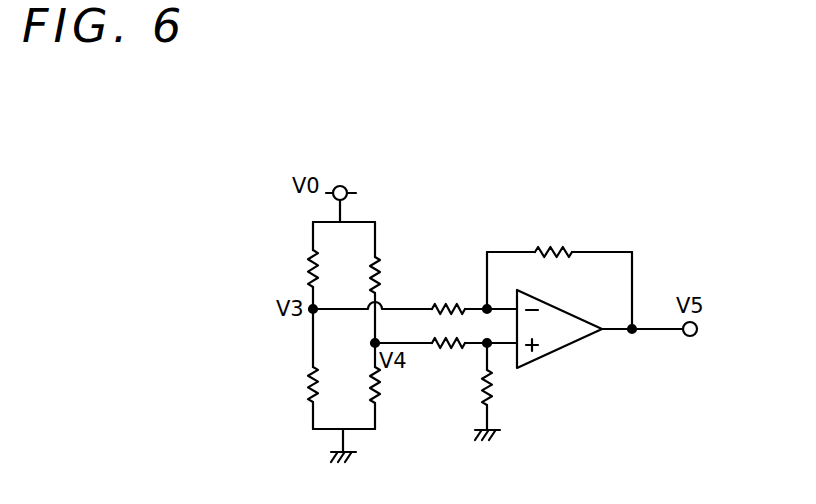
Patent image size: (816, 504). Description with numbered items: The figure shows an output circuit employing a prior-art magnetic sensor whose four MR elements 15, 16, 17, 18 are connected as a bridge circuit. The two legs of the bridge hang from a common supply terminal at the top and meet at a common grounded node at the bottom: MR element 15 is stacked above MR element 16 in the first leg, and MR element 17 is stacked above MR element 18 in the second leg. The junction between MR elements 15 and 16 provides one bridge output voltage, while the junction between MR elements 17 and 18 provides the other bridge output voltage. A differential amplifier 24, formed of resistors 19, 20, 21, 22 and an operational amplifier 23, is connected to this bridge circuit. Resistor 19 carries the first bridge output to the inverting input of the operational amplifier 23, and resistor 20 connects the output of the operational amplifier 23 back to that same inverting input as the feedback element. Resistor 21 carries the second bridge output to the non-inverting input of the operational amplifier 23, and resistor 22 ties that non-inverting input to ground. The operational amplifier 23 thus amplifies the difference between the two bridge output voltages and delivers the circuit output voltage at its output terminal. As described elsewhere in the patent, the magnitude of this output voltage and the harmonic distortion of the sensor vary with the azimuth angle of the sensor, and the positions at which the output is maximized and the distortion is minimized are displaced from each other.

The MR element 15 is at (307, 263).
The MR element 16 is at (307, 391).
The MR element 17 is at (382, 265).
The MR element 18 is at (382, 393).
The resistor 19 is at (448, 300).
The resistor 20 is at (548, 243).
The resistor 21 is at (448, 357).
The resistor 22 is at (496, 383).
The operational amplifier 23 is at (575, 313).
The differential amplifier 24 is at (566, 361).